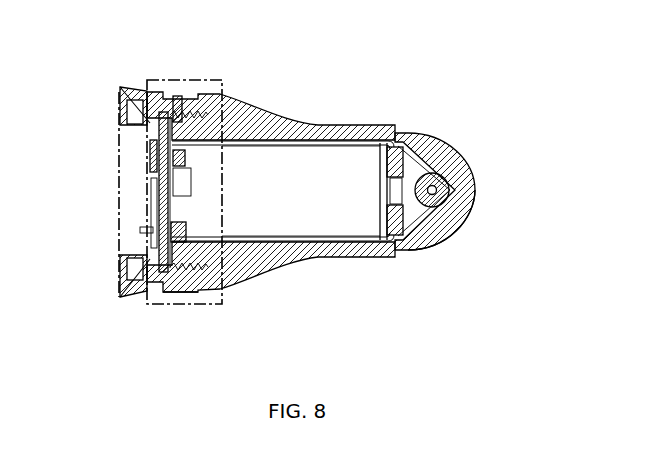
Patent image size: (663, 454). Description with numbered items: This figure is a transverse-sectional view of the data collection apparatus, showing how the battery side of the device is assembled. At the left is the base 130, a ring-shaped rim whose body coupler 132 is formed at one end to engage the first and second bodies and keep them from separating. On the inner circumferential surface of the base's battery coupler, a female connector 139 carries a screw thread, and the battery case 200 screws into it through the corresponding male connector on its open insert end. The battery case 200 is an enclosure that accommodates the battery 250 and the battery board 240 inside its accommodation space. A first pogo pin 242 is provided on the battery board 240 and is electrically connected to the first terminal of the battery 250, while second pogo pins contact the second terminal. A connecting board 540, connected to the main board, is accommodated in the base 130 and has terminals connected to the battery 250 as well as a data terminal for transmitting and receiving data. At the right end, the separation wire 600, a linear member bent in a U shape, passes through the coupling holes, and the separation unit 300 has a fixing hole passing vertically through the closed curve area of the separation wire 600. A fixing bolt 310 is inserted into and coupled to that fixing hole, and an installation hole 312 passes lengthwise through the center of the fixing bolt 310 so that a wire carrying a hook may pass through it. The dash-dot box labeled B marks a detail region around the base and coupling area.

The base 130 is at (156, 296).
The body coupler 132 is at (130, 297).
The female connector 139 is at (184, 293).
The battery case 200 is at (365, 124).
The battery board 240 is at (178, 178).
The first pogo pin 242 is at (177, 232).
The battery 250 is at (323, 160).
The separation unit 300 is at (443, 141).
The fixing bolt 310 is at (442, 220).
The installation hole 312 is at (436, 190).
The connecting board 540 is at (162, 153).
The separation wire 600 is at (363, 242).
The detail region B is at (185, 80).